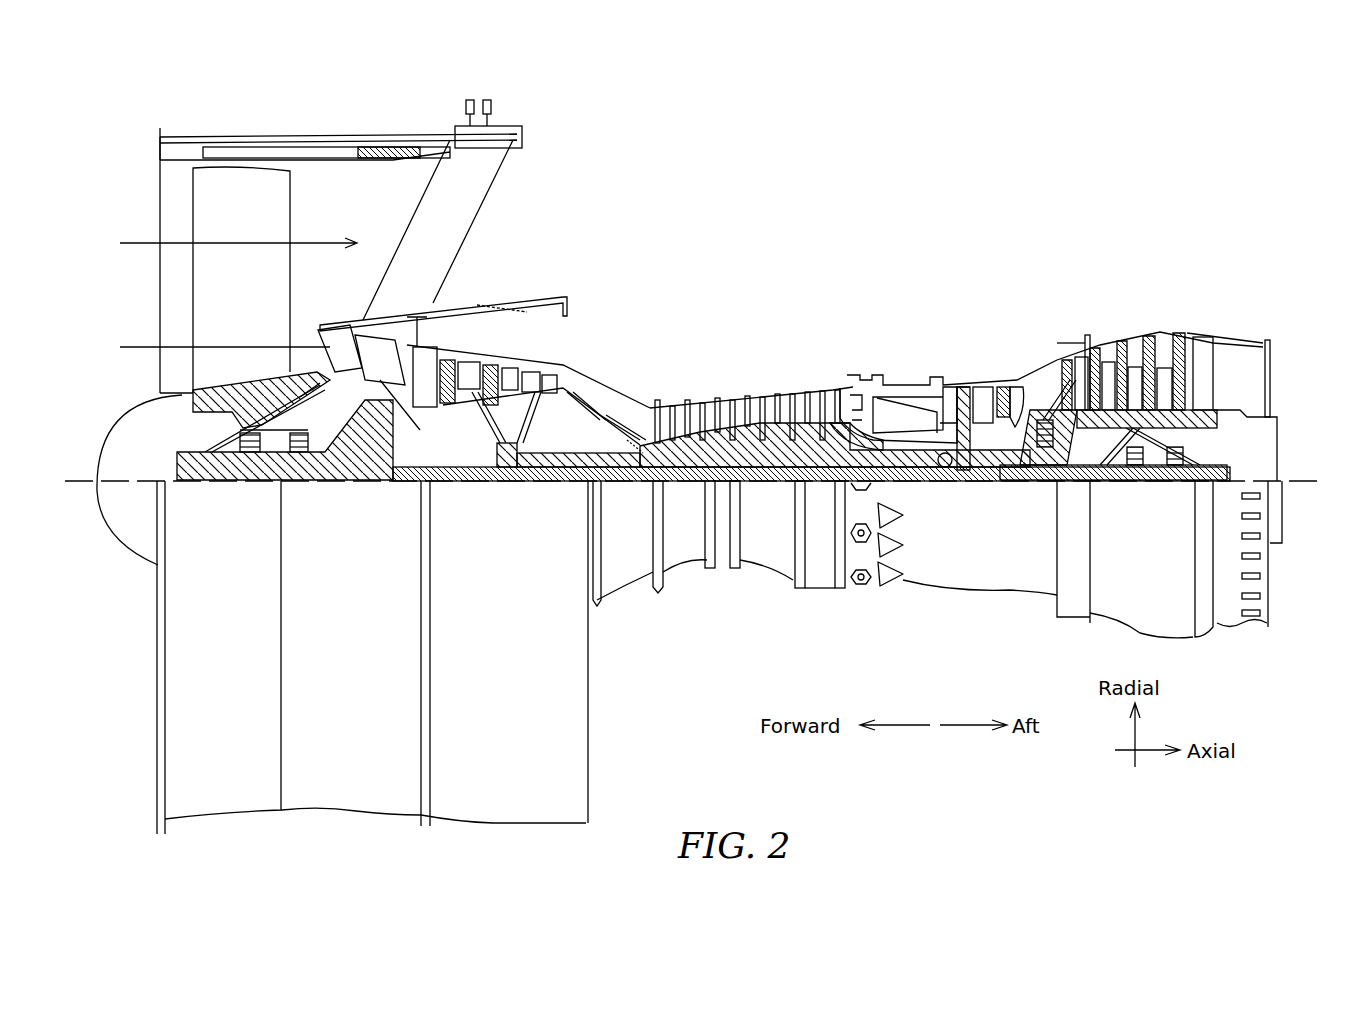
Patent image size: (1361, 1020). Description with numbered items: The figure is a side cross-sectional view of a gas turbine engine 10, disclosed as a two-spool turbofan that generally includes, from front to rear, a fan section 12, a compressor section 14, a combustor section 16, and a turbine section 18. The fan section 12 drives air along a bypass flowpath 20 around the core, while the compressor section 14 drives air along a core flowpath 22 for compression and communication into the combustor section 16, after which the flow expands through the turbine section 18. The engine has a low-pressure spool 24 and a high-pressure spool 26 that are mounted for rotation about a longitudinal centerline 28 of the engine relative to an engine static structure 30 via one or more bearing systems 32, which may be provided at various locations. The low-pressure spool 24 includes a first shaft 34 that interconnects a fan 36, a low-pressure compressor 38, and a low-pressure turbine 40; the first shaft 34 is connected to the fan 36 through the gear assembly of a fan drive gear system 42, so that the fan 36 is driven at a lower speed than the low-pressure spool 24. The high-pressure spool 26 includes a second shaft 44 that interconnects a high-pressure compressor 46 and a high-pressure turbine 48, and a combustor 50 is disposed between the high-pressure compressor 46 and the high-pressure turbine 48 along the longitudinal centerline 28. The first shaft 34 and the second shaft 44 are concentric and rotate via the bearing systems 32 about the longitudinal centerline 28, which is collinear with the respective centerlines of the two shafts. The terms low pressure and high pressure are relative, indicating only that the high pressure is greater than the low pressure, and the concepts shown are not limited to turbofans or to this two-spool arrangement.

The gas turbine engine 10 is at (1035, 184).
The fan section 12 is at (422, 117).
The compressor section 14 is at (432, 263).
The combustor section 16 is at (965, 263).
The turbine section 18 is at (1205, 263).
The bypass flowpath 20 is at (130, 243).
The core flowpath 22 is at (130, 347).
The low-pressure spool 24 is at (778, 496).
The high-pressure spool 26 is at (762, 397).
The longitudinal centerline 28 is at (1300, 477).
The engine static structure 30 is at (828, 602).
The bearing systems 32 is at (1033, 470).
The first shaft 34 is at (610, 483).
The fan 36 is at (218, 285).
The low-pressure compressor 38 is at (507, 360).
The low-pressure turbine 40 is at (1133, 337).
The fan drive gear system 42 is at (385, 502).
The second shaft 44 is at (960, 470).
The high-pressure compressor 46 is at (737, 397).
The high-pressure turbine 48 is at (987, 383).
The combustor 50 is at (903, 417).